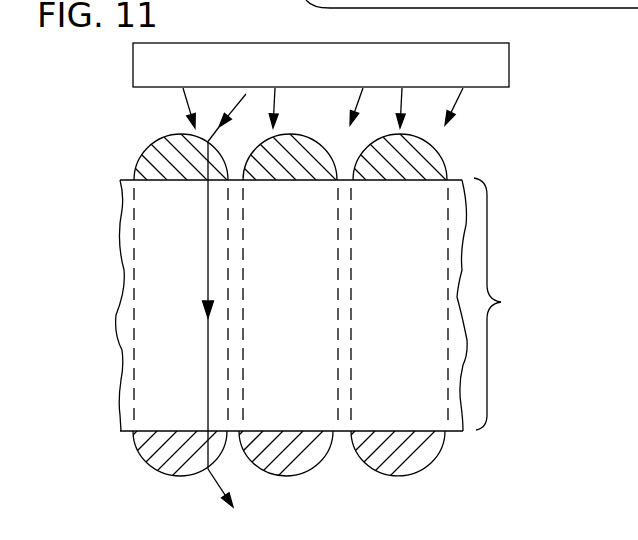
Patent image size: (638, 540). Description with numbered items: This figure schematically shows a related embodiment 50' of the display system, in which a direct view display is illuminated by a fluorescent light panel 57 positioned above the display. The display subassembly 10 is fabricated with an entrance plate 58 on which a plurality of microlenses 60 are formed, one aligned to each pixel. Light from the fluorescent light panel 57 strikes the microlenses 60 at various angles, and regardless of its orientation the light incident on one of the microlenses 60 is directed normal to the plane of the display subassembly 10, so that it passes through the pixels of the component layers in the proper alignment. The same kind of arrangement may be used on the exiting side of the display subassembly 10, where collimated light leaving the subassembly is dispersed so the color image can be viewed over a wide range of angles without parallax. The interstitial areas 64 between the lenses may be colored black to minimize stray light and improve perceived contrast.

The fluorescent light panel 57 is at (480, 88).
The entrance plate 58 is at (462, 180).
The microlenses 60 is at (320, 144).
The display subassembly 10 is at (324, 304).
The interstitial areas 64 is at (234, 433).
The embodiment 50' is at (322, 456).